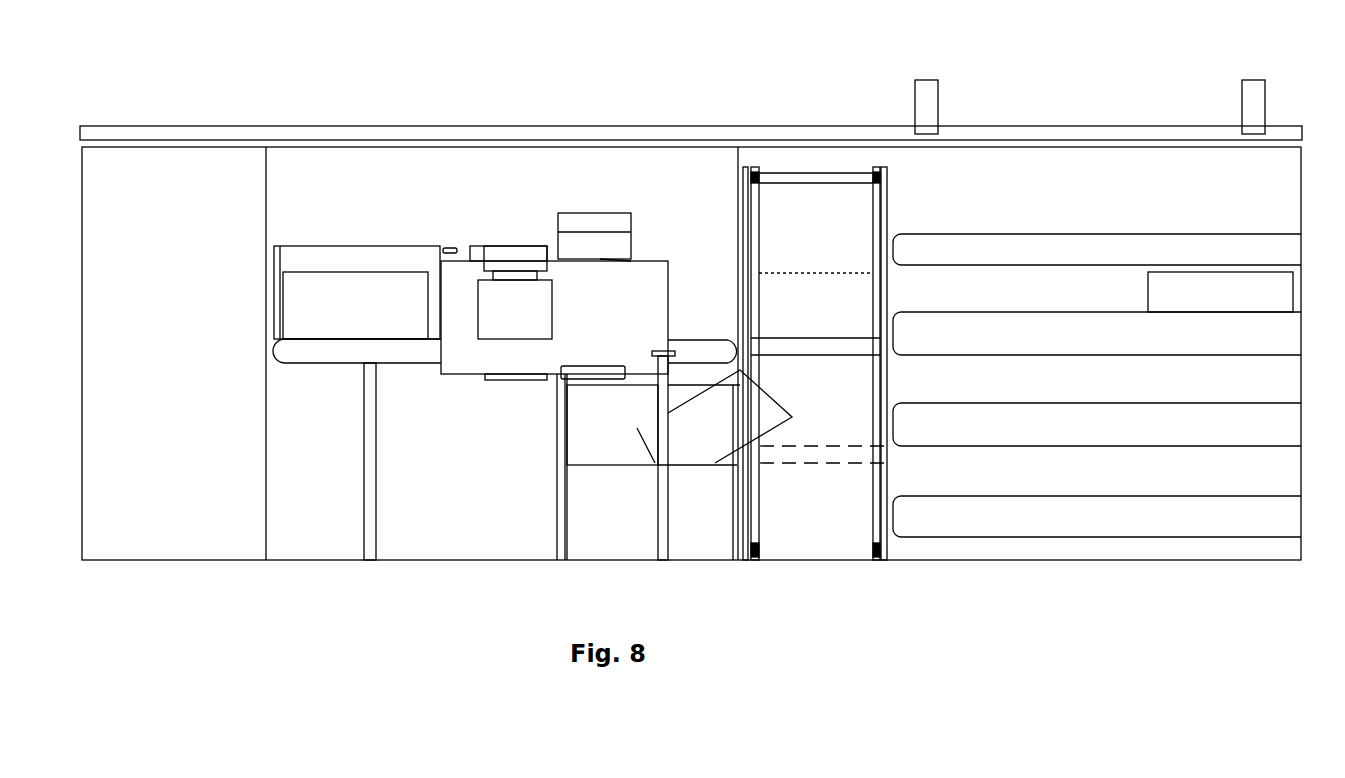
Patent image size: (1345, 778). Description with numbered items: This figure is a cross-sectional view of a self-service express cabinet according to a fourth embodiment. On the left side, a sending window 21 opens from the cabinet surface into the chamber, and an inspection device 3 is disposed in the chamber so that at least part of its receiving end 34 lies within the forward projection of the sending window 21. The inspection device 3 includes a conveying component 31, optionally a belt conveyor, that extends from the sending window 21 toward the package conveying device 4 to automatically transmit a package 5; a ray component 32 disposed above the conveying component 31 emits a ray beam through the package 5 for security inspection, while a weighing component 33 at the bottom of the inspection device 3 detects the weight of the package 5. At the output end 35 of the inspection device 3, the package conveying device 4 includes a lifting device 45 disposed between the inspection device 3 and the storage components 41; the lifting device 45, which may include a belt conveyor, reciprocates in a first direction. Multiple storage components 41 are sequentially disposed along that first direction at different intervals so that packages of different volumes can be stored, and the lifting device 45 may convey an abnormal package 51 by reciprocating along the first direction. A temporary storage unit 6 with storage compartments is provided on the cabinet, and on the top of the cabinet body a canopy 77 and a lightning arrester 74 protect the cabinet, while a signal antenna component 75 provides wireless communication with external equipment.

The inspection device 3 is at (640, 249).
The package conveying device 4 is at (1097, 350).
The package 5 is at (300, 312).
The temporary storage unit 6 is at (158, 549).
The sending window 21 is at (300, 258).
The conveying component 31 is at (355, 358).
The ray component 32 is at (510, 247).
The weighing component 33 is at (565, 383).
The receiving end 34 is at (275, 352).
The output end 35 is at (740, 345).
The storage component 41 is at (1135, 400).
The lifting device 45 is at (880, 215).
The abnormal package 51 is at (640, 431).
The lightning arrester 74 is at (1257, 100).
The signal antenna component 75 is at (920, 103).
The canopy 77 is at (312, 135).